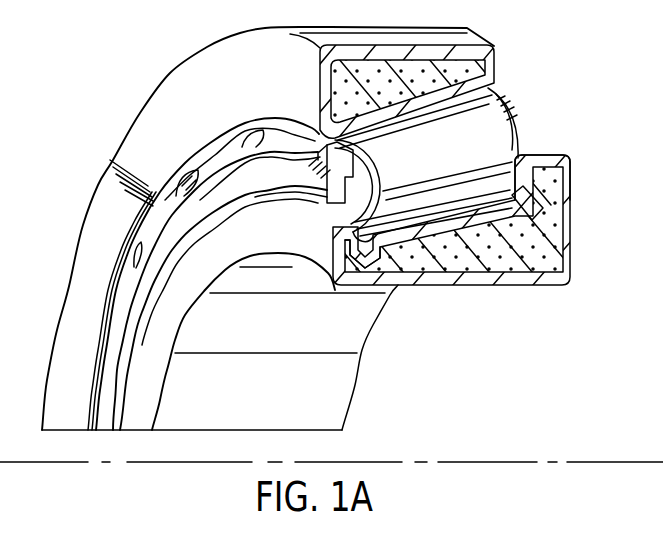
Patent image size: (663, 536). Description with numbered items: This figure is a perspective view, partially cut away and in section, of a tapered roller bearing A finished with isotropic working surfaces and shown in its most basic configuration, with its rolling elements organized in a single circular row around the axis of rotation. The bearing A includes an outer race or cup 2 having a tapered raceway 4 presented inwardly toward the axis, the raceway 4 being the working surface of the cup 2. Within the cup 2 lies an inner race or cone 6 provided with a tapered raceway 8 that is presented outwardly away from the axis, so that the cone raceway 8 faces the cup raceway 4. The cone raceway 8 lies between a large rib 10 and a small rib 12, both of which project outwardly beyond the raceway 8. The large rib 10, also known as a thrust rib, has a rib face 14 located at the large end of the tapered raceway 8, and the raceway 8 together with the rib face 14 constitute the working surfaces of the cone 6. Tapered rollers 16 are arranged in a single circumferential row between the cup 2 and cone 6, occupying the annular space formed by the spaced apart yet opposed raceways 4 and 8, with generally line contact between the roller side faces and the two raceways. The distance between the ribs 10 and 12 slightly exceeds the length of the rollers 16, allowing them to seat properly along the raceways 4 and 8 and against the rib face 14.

The bearing A is at (90, 157).
The cup 2 is at (386, 44).
The tapered raceway 4 is at (448, 100).
The cone 6 is at (492, 284).
The tapered raceway 8 is at (425, 226).
The large rib 10 is at (568, 170).
The small rib 12 is at (327, 229).
The rib face 14 is at (512, 162).
The tapered rollers 16 is at (493, 128).